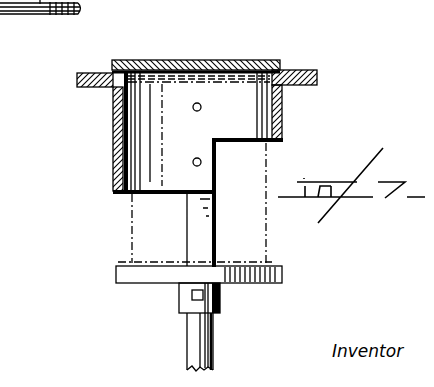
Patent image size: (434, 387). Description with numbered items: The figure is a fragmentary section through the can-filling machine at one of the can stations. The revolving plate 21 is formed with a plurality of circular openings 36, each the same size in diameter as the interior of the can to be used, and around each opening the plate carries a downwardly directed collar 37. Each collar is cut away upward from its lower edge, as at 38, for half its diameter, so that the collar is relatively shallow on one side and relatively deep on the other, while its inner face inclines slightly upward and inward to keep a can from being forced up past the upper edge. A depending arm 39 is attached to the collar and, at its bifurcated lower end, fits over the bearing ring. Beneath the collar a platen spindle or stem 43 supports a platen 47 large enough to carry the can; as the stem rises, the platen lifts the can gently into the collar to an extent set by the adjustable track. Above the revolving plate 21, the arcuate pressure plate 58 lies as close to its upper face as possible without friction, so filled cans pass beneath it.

The revolving plate 21 is at (76, 80).
The circular openings 36 is at (228, 72).
The downwardly directed collar 37 is at (113, 143).
The cut-away portion of collar 38 is at (216, 151).
The depending arm 39 is at (198, 232).
The platen spindle or stem 43 is at (197, 338).
The platen 47 is at (128, 276).
The pressure plate 58 is at (179, 70).